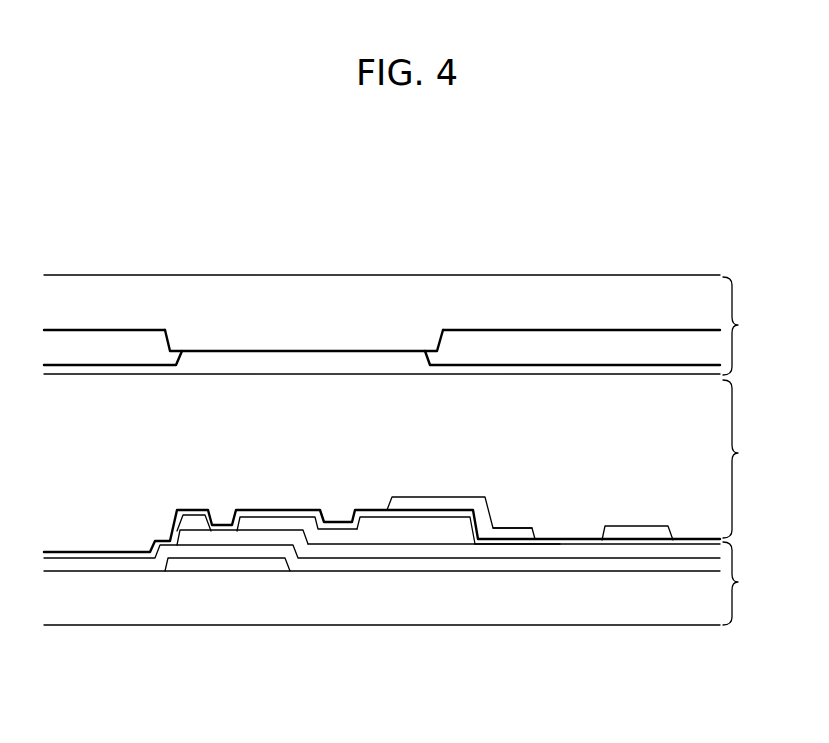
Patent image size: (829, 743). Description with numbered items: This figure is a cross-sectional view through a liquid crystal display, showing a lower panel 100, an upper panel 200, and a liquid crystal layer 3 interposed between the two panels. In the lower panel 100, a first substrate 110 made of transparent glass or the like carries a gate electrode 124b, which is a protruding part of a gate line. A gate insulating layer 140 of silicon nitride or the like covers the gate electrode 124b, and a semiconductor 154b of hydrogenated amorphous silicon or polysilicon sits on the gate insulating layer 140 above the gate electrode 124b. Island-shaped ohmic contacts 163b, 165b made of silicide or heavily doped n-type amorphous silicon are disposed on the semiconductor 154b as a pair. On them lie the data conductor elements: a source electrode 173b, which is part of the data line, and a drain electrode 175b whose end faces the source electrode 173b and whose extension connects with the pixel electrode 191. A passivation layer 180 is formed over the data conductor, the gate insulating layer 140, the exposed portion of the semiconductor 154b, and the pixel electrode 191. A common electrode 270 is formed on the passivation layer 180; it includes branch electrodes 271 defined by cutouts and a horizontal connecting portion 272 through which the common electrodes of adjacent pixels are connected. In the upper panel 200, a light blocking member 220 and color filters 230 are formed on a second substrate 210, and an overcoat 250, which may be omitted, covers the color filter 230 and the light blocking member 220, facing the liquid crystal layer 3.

The liquid crystal layer 3 is at (737, 459).
The lower panel 100 is at (749, 583).
The first substrate 110 is at (690, 605).
The gate electrode 124b is at (260, 565).
The gate insulating layer 140 is at (309, 565).
The semiconductor 154b is at (362, 552).
The ohmic contact 163b is at (186, 533).
The ohmic contact 165b is at (400, 545).
The source electrode 173b is at (198, 523).
The drain electrode 175b is at (446, 533).
The passivation layer 180 is at (568, 546).
The pixel electrode 191 is at (512, 553).
The upper panel 200 is at (409, 326).
The second substrate 210 is at (618, 298).
The light blocking member 220 is at (259, 341).
The color filter 230 is at (116, 346).
The overcoat 250 is at (358, 362).
The common electrode 270 is at (494, 531).
The branch electrode 271 is at (632, 533).
The horizontal connecting portion 272 is at (534, 530).